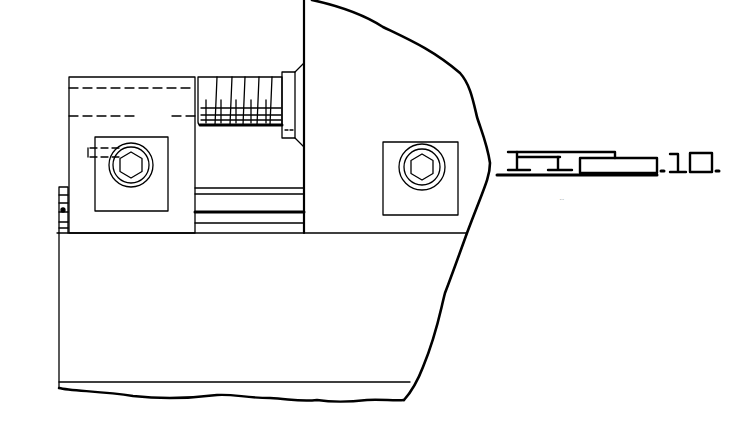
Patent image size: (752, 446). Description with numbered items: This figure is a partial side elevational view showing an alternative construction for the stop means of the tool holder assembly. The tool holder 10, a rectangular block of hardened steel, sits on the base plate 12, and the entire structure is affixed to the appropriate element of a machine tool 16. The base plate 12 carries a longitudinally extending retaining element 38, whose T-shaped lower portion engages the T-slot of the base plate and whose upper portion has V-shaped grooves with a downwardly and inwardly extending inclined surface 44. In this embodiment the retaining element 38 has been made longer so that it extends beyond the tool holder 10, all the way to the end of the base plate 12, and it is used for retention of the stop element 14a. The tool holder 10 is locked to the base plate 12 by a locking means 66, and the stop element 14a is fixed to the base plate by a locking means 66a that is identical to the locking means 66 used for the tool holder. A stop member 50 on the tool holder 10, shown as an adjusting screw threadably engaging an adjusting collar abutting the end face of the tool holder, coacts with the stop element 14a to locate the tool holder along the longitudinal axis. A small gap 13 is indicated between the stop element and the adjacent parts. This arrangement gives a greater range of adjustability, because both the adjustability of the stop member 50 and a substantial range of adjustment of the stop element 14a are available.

The tool holder 10 is at (398, 79).
The base plate 12 is at (272, 303).
The gap 13 is at (96, 153).
The stop element 14a is at (123, 83).
The machine tool 16 is at (410, 397).
The retaining element 38 is at (255, 214).
The inclined surface 44 is at (305, 205).
The stop member 50 is at (281, 66).
The locking means 66 is at (407, 139).
The locking means 66a is at (147, 136).